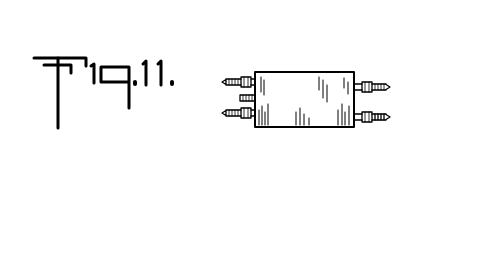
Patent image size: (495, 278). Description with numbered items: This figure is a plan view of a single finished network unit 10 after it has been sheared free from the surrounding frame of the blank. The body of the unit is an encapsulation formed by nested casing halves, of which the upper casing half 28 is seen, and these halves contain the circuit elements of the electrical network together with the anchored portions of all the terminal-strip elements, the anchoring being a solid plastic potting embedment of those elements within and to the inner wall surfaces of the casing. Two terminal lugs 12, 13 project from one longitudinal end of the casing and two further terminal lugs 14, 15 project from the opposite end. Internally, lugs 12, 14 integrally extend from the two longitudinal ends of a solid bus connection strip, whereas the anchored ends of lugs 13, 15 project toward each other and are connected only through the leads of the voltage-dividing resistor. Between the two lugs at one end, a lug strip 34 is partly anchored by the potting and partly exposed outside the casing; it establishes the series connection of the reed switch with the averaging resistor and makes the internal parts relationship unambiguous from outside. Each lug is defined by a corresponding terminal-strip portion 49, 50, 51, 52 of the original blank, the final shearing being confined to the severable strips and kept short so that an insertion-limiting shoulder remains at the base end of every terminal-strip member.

The network unit 10 is at (304, 78).
The upper casing half 28 is at (307, 107).
The terminal lug 12 is at (242, 57).
The terminal-strip portion 49 is at (224, 81).
The terminal lug 13 is at (240, 133).
The terminal-strip portion 50 is at (228, 117).
The terminal lug 14 is at (405, 65).
The terminal-strip portion 51 is at (375, 83).
The terminal lug 15 is at (406, 129).
The terminal-strip portion 52 is at (373, 121).
The lug strip 34 is at (240, 98).